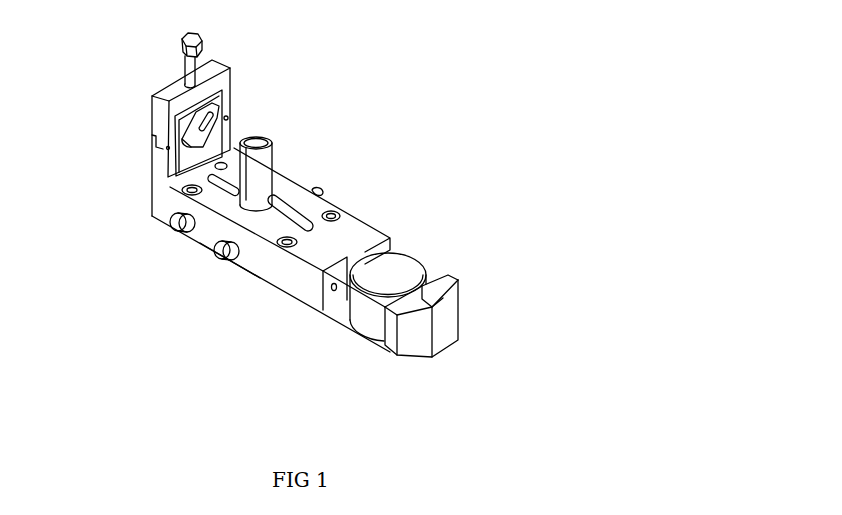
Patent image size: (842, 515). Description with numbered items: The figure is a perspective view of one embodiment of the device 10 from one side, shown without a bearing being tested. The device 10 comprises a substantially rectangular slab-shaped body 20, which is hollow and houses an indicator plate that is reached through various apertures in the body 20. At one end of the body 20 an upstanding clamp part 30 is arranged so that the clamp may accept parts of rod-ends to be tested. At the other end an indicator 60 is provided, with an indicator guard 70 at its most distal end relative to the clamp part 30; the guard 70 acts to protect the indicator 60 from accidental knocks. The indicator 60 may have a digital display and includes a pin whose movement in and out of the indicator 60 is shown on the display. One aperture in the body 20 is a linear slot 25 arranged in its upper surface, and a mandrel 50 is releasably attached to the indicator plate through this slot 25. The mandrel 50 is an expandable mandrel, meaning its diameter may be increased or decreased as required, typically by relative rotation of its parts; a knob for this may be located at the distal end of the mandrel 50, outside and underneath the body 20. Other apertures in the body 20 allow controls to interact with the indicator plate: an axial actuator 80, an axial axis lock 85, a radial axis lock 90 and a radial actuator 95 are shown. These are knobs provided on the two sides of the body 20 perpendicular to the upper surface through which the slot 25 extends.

The device 10 is at (440, 50).
The body 20 is at (316, 208).
The linear slot 25 is at (292, 216).
The clamp part 30 is at (250, 97).
The mandrel 50 is at (275, 142).
The indicator 60 is at (352, 294).
The indicator guard 70 is at (460, 315).
The axial actuator 80 is at (173, 229).
The axial axis lock 85 is at (220, 250).
The radial axis lock 90 is at (285, 177).
The radial actuator 95 is at (331, 198).